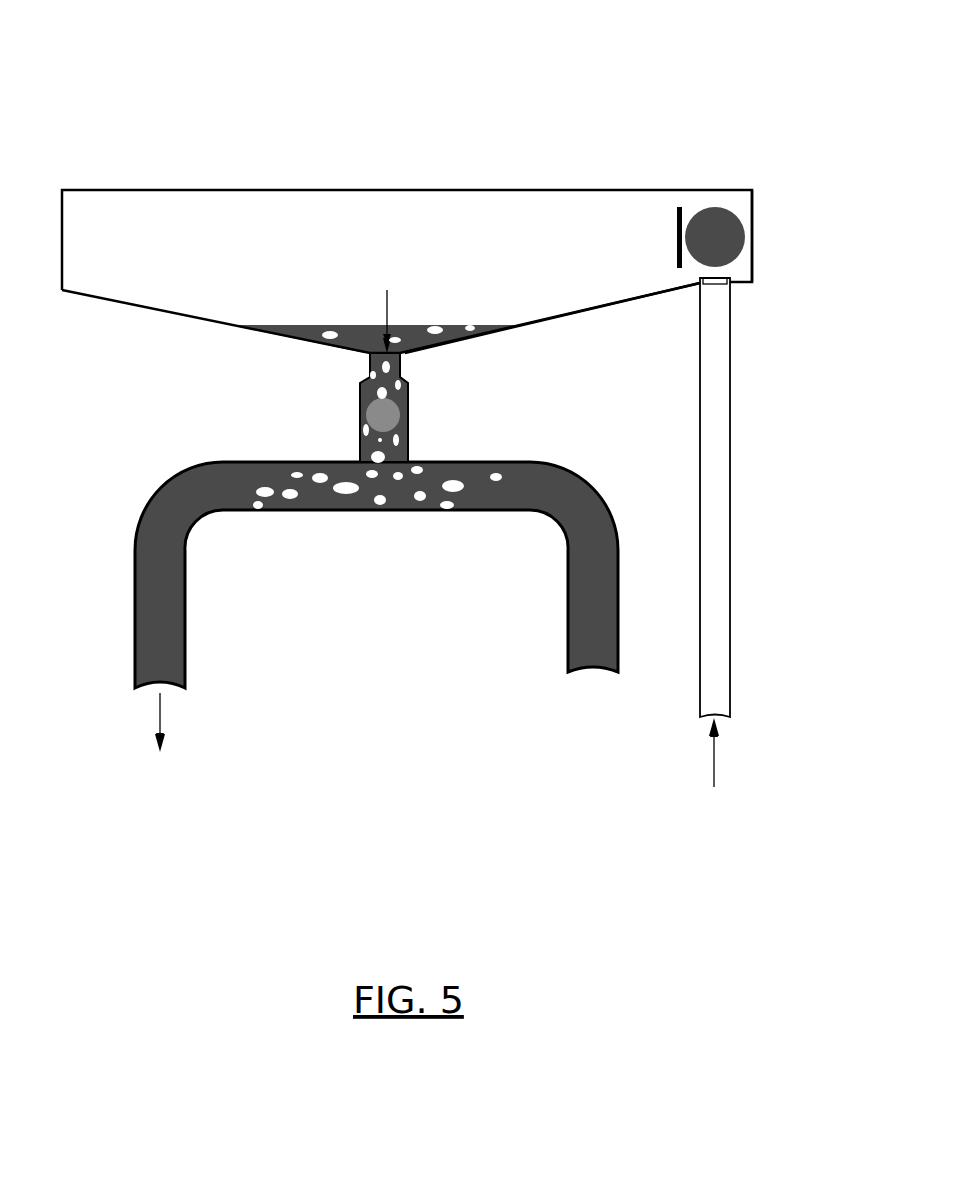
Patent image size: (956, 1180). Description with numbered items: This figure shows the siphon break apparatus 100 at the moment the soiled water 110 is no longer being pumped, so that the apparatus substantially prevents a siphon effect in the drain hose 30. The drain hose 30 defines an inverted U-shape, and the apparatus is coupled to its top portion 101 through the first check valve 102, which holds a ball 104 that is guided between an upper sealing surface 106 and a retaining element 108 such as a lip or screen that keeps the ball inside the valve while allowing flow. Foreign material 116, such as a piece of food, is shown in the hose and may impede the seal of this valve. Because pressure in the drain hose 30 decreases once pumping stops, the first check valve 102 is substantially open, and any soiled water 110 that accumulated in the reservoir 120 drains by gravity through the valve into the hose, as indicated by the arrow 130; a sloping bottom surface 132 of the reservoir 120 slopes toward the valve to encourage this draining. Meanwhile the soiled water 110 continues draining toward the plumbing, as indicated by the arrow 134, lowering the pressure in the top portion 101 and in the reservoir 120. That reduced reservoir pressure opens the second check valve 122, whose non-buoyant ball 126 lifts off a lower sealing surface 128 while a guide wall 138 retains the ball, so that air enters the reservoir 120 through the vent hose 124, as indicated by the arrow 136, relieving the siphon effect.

The siphon break apparatus 100 is at (565, 55).
The reservoir 120 is at (378, 190).
The second check valve 122 is at (735, 207).
The ball 126 is at (737, 225).
The guide wall 138 is at (676, 240).
The lower sealing surface 128 is at (715, 281).
The vent hose 124 is at (730, 478).
The arrow 130 is at (394, 300).
The sloping bottom surface 132 is at (540, 321).
The first check valve 102 is at (408, 405).
The ball 104 is at (364, 420).
The upper sealing surface 106 is at (382, 390).
The top portion 101 is at (438, 462).
The retaining element 108 is at (374, 438).
The soiled water 110 is at (513, 491).
The foreign material 116 is at (292, 494).
The drain hose 30 is at (327, 510).
The arrow 134 is at (160, 725).
The arrow 136 is at (713, 750).